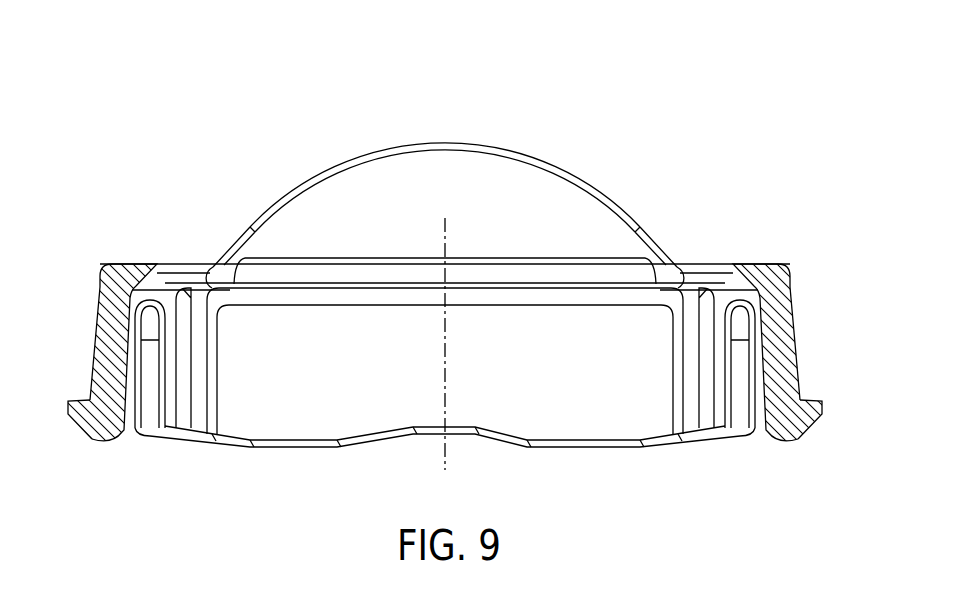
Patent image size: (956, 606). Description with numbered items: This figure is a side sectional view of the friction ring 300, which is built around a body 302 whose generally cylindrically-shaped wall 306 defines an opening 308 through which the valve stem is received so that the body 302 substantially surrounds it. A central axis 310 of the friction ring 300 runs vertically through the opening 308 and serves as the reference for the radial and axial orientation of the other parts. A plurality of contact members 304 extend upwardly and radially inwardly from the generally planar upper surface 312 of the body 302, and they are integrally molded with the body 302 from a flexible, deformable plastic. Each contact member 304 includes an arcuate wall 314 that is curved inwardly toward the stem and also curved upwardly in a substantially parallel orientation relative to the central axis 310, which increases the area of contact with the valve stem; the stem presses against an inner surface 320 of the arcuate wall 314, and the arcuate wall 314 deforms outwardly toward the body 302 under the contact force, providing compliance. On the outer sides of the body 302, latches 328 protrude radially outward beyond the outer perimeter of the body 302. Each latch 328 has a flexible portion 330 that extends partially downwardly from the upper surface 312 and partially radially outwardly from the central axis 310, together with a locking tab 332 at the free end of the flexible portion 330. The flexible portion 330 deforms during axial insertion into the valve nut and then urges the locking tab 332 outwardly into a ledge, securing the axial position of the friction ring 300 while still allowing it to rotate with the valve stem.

The friction ring 300 is at (200, 52).
The body 302 is at (395, 344).
The contact member 304 is at (453, 132).
The wall 306 is at (792, 351).
The opening 308 is at (296, 421).
The central axis 310 is at (447, 237).
The upper surface 312 is at (748, 331).
The arcuate wall 314 is at (391, 234).
The inner surface 320 is at (494, 238).
The latch 328 is at (68, 376).
The flexible portion 330 is at (105, 343).
The locking tab 332 is at (79, 430).